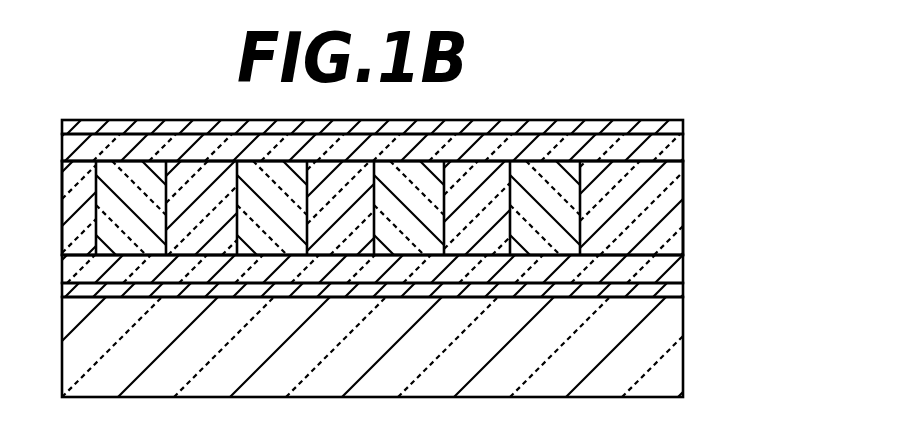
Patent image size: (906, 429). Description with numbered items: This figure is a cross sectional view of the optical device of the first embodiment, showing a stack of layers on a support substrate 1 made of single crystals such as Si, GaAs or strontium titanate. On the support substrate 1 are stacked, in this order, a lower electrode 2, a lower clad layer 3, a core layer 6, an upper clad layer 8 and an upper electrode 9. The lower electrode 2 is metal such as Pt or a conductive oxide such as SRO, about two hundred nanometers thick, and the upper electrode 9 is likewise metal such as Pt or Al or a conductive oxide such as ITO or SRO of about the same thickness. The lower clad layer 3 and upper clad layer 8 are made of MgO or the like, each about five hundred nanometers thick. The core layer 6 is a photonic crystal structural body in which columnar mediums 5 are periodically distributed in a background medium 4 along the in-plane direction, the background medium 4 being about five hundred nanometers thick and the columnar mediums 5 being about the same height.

The support substrate 1 is at (683, 361).
The lower electrode 2 is at (683, 292).
The lower clad layer 3 is at (683, 267).
The background medium 4 is at (683, 225).
The columnar mediums 5 is at (580, 193).
The core layer 6 is at (782, 155).
The upper clad layer 8 is at (683, 147).
The upper electrode 9 is at (683, 121).